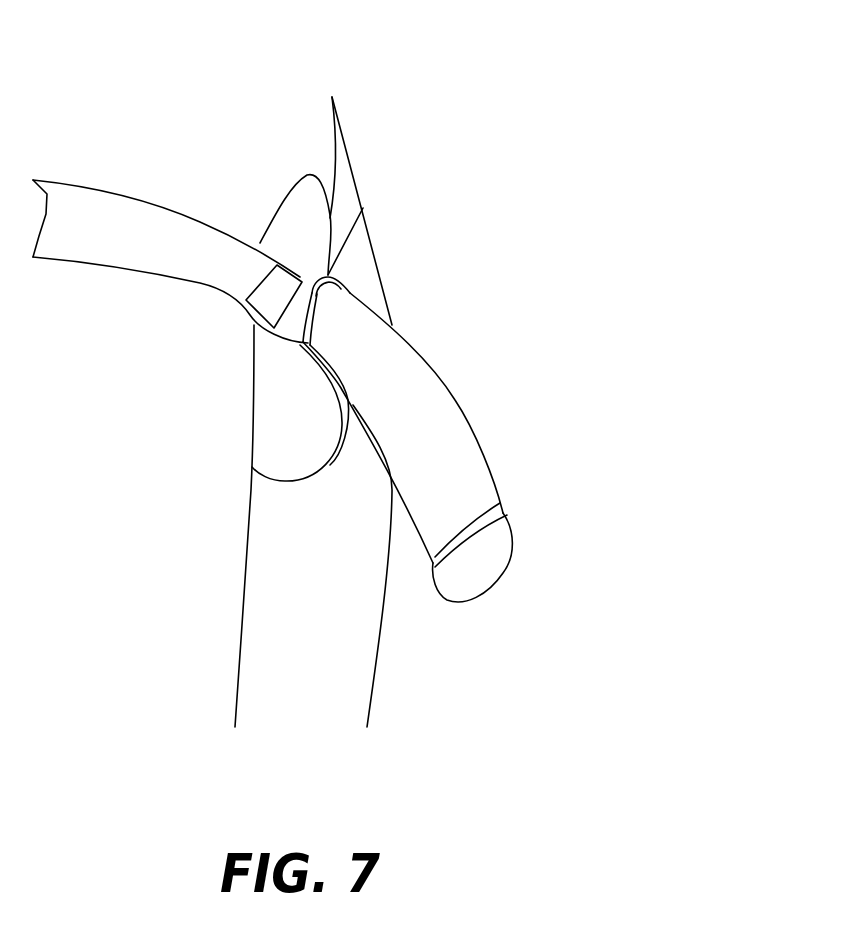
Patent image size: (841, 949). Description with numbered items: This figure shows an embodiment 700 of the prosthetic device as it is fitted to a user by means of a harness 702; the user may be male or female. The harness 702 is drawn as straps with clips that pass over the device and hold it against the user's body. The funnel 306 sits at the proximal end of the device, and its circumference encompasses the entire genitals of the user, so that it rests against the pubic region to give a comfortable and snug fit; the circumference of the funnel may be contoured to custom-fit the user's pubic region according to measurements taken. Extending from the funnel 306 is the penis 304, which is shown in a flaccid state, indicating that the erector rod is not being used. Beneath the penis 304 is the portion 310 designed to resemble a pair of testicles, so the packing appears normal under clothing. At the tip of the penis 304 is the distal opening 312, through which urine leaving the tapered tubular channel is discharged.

The embodiment of the device 700 is at (593, 143).
The funnel 306 is at (287, 217).
The harness 702 is at (348, 200).
The penis 304 is at (443, 420).
The portion resembling a pair of testicles 310 is at (272, 418).
The distal opening 312 is at (487, 595).